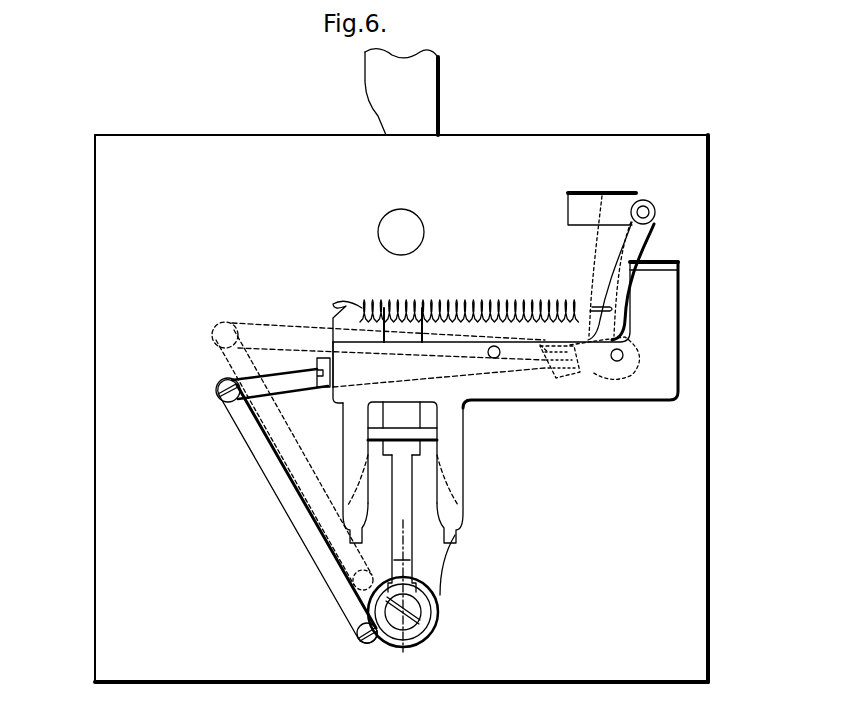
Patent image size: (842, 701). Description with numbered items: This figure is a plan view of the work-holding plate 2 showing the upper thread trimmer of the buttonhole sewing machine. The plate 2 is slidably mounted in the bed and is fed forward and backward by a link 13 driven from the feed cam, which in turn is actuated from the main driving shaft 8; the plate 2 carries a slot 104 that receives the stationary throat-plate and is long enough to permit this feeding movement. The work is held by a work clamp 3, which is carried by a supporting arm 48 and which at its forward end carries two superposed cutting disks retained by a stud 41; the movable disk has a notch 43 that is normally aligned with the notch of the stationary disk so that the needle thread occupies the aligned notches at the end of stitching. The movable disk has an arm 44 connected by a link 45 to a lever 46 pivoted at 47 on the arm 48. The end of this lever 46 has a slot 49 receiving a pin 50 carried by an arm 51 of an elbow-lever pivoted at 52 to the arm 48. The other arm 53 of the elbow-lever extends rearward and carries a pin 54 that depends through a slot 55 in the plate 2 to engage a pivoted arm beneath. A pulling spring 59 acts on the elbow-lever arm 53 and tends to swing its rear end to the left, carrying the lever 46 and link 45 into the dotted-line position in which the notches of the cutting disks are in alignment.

The work-holding plate 2 is at (108, 525).
The work clamp 3 is at (440, 563).
The main driving shaft 8 is at (404, 560).
The link 13 is at (378, 73).
The stud 41 is at (412, 618).
The notch 43 is at (360, 598).
The arm 44 is at (378, 641).
The link 45 is at (307, 550).
The lever 46 is at (287, 380).
The pivot 47 is at (495, 345).
The arm 48 is at (516, 392).
The slot 49 is at (540, 345).
The pin 50 is at (579, 378).
The arm 51 is at (586, 370).
The pivot 52 is at (622, 352).
The arm of elbow-lever 53 is at (626, 252).
The pin 54 is at (648, 209).
The slot 55 is at (588, 206).
The pulling spring 59 is at (440, 290).
The slot 104 is at (410, 552).